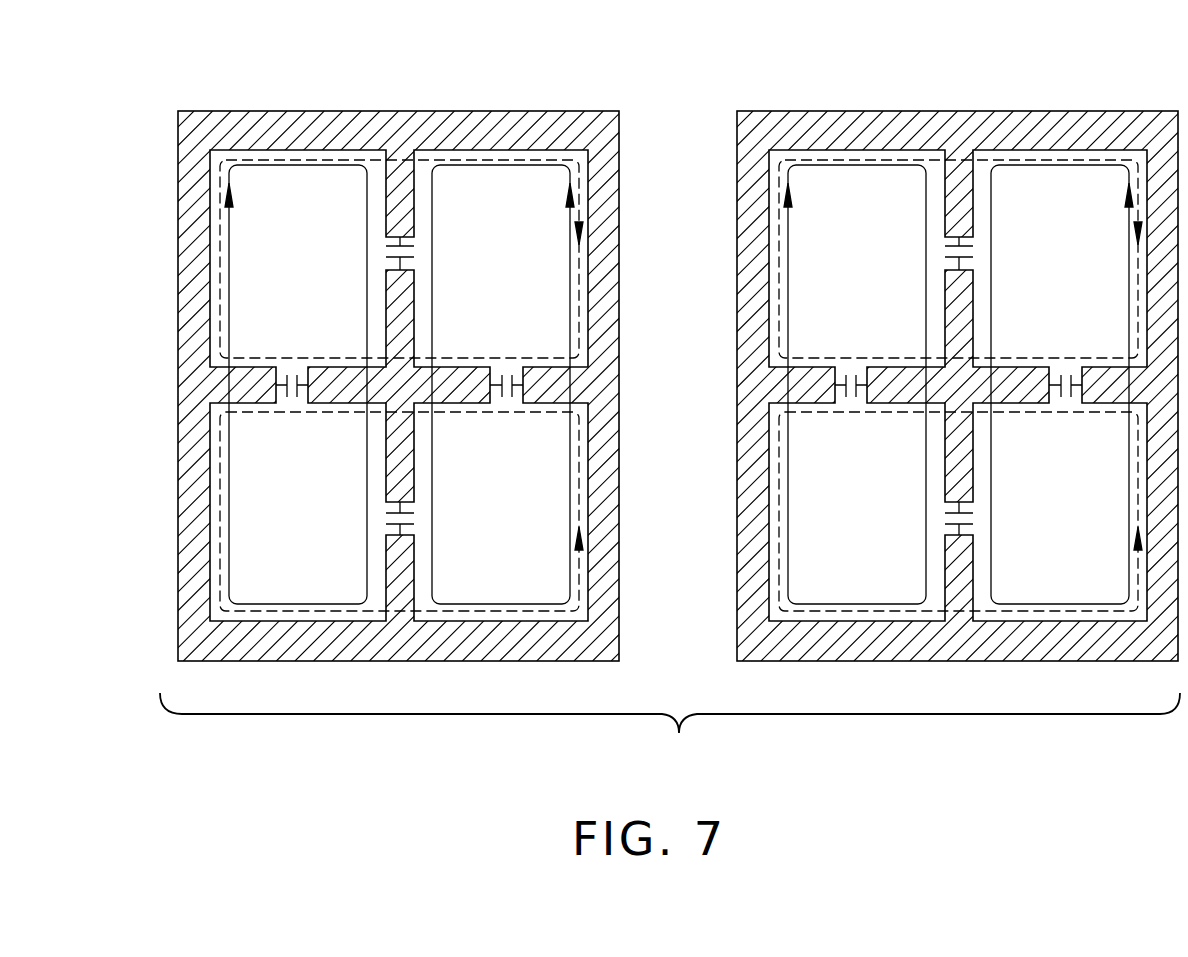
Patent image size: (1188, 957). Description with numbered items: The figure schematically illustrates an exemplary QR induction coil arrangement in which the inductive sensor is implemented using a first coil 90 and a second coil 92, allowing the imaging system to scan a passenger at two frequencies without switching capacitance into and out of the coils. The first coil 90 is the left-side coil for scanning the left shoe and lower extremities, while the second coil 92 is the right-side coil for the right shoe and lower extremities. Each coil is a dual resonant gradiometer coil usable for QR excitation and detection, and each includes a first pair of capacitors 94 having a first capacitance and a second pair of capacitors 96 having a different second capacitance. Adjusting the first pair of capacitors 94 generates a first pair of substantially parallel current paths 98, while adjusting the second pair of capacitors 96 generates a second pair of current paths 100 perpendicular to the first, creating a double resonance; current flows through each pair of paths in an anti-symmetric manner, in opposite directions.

The first coil 90 is at (470, 110).
The second coil 92 is at (1029, 110).
The first pair of capacitors 94 is at (416, 254).
The second pair of capacitors 96 is at (292, 367).
The first pair of current paths 98 is at (229, 243).
The second pair of current paths 100 is at (458, 357).